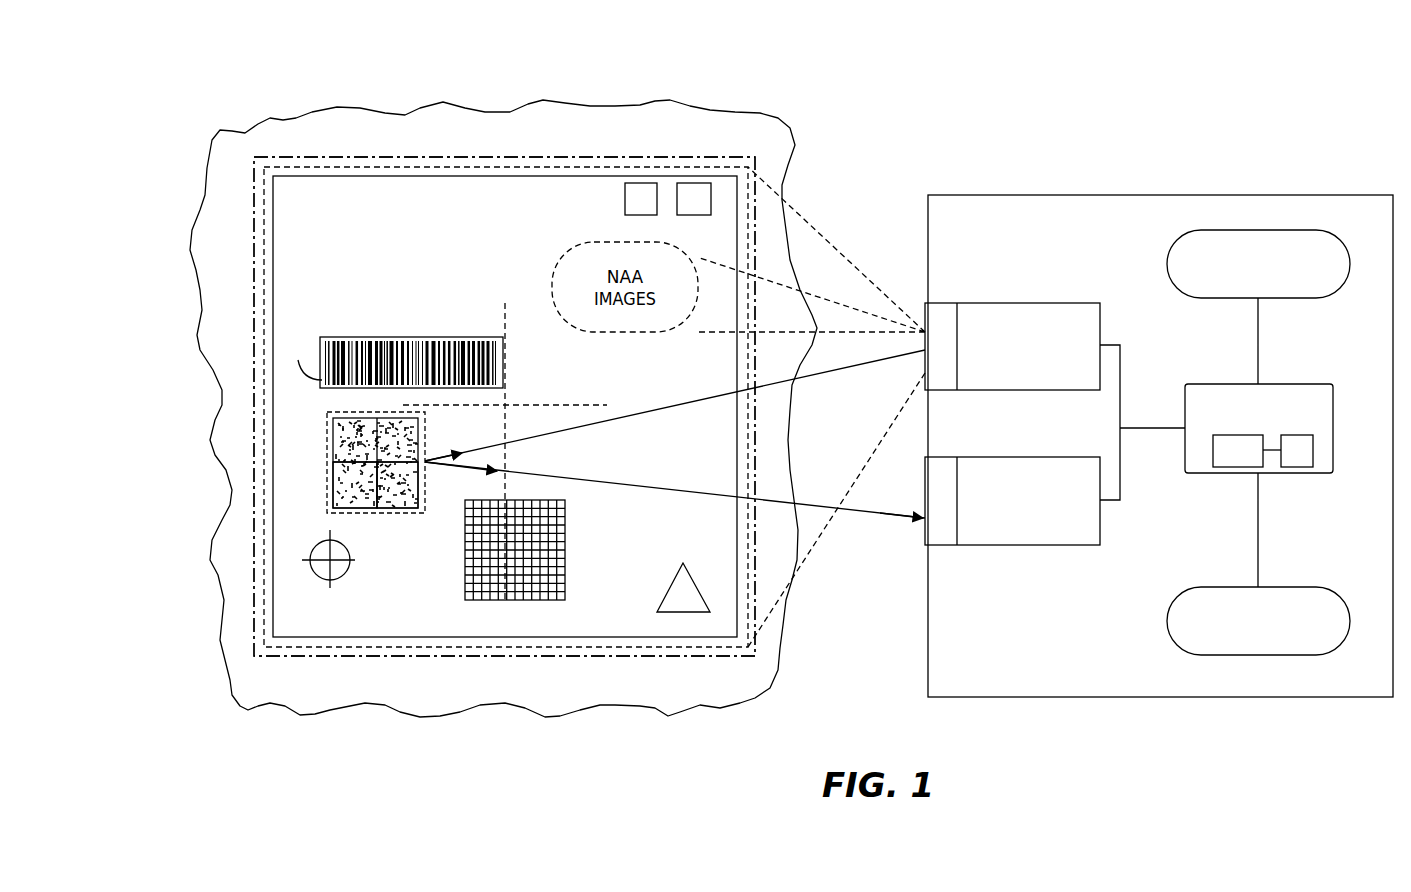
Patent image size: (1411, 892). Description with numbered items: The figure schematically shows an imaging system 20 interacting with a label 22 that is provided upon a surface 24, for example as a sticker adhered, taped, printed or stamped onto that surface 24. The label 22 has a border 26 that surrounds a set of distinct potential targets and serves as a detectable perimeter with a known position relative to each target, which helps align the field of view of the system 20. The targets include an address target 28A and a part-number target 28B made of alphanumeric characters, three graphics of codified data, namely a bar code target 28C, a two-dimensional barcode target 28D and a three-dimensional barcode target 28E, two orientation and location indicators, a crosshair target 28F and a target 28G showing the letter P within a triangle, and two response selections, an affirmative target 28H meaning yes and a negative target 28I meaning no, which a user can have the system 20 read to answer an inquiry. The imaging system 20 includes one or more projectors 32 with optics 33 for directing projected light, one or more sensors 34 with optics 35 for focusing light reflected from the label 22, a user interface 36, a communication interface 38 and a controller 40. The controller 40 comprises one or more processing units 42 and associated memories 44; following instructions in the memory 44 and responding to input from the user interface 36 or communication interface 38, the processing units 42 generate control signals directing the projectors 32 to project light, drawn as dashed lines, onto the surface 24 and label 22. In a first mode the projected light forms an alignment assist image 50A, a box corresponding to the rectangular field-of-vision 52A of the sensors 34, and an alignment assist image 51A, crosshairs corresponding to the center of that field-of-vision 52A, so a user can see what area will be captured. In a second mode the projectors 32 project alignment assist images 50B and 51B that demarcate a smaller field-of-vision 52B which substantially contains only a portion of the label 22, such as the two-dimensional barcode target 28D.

The imaging system 20 is at (1152, 148).
The label 22 is at (522, 156).
The surface 24 is at (660, 128).
The border 26 is at (590, 637).
The target 28A is at (355, 188).
The target 28B is at (393, 283).
The target 28C is at (462, 337).
The target 28D is at (425, 432).
The target 28E is at (567, 563).
The target 28F is at (345, 575).
The target 28G is at (670, 588).
The target 28H is at (624, 198).
The target 28I is at (695, 216).
The projector 32 is at (1025, 302).
The optics 33 is at (925, 313).
The sensor 34 is at (1022, 547).
The optics 35 is at (925, 545).
The user interface 36 is at (1258, 657).
The communication interface 38 is at (1270, 232).
The controller 40 is at (1288, 475).
The processing unit 42 is at (1217, 475).
The memory 44 is at (1315, 450).
The alignment assist image 50A is at (678, 647).
The alignment assist image 50B is at (408, 514).
The alignment assist image 51A is at (553, 405).
The alignment assist image 51B is at (333, 418).
The field-of-vision 52A is at (440, 657).
The field-of-vision 52B is at (362, 514).